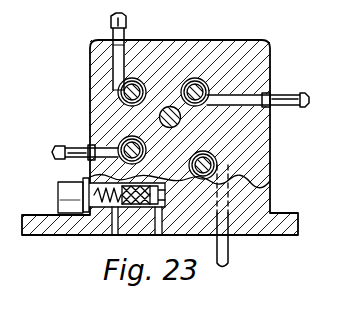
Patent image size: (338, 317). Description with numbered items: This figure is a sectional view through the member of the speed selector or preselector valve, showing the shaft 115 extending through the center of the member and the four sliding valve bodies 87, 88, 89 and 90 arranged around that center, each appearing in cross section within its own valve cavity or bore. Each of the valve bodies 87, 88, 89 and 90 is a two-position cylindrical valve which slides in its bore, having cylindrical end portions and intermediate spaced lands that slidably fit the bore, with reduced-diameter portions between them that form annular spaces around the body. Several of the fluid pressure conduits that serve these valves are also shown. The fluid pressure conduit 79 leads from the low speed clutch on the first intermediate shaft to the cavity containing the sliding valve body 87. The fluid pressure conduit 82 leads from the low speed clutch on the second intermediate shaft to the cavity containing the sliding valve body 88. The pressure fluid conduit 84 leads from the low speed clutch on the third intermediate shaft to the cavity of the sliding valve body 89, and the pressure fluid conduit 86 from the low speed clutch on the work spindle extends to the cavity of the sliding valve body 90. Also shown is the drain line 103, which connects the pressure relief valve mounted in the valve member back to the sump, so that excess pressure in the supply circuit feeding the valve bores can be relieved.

The fluid pressure conduit 79 is at (82, 147).
The fluid pressure conduit 82 is at (127, 20).
The pressure fluid conduit 84 is at (293, 108).
The pressure fluid conduit 86 is at (229, 262).
The sliding valve body 87 is at (147, 150).
The sliding valve body 88 is at (141, 84).
The sliding valve body 89 is at (206, 85).
The sliding valve body 90 is at (217, 162).
The drain line 103 is at (128, 210).
The shaft 115 is at (181, 118).